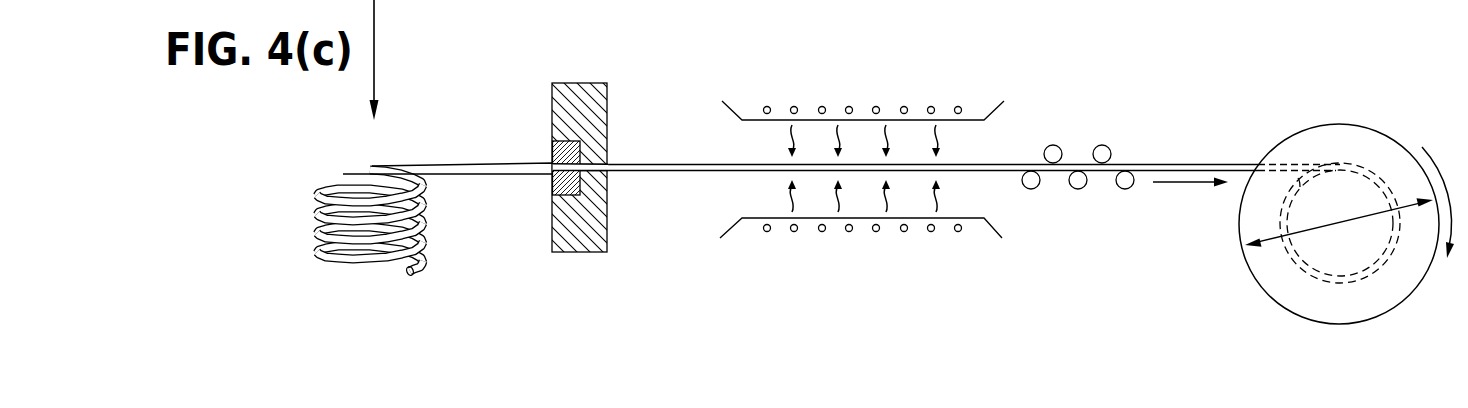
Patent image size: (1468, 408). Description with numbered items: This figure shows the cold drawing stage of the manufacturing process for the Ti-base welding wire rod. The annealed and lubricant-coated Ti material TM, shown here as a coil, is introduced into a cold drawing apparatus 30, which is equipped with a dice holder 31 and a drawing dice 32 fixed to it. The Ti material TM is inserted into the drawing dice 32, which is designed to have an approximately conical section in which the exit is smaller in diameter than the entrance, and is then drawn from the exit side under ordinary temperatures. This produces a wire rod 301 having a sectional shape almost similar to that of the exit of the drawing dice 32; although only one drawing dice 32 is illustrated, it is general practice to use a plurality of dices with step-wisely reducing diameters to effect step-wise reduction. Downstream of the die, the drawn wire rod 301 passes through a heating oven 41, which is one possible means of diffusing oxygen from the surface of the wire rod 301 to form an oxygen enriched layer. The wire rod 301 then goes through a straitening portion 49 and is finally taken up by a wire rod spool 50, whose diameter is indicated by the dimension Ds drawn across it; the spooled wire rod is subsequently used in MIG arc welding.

The Ti material TM is at (338, 170).
The cold drawing apparatus 30 is at (601, 135).
The dice holder 31 is at (598, 138).
The drawing dice 32 is at (553, 183).
The wire rod 301 is at (668, 173).
The heating oven 41 is at (957, 68).
The straitening portion 49 is at (1088, 133).
The wire rod spool 50 is at (1346, 208).
The spool diameter Ds is at (1339, 221).